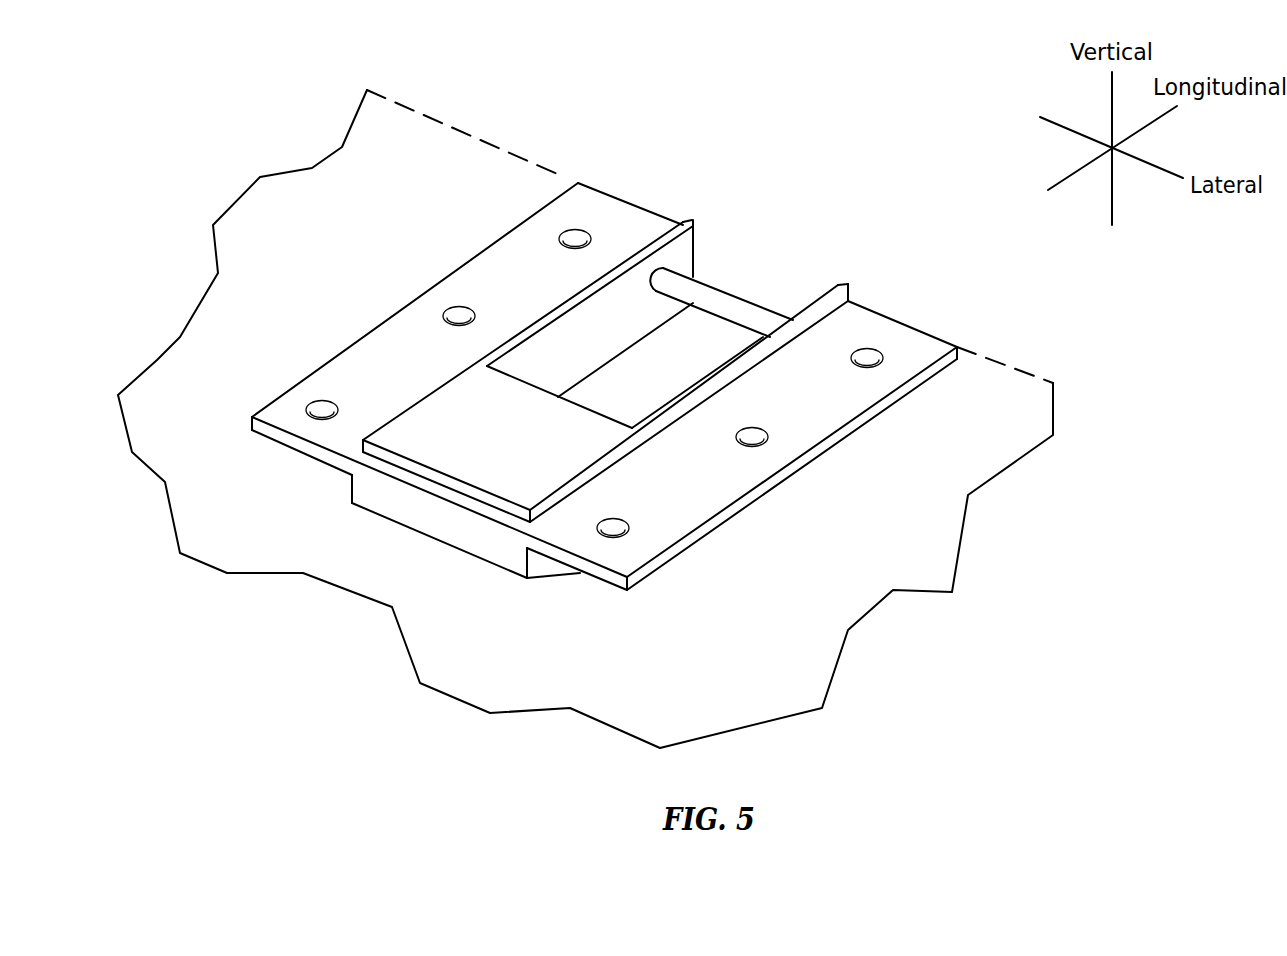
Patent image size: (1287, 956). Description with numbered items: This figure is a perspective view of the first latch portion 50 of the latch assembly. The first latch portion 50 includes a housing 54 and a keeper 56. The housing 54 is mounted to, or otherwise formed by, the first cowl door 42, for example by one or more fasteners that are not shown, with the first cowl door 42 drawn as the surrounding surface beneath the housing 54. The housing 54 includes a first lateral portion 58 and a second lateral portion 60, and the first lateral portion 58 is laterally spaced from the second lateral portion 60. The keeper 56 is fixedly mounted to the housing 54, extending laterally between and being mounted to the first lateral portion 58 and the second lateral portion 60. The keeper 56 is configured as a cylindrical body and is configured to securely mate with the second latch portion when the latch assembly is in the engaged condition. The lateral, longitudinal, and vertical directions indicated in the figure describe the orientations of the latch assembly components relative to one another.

The first cowl door 42 is at (281, 183).
The first latch portion 50 is at (876, 144).
The housing 54 is at (808, 414).
The keeper 56 is at (725, 300).
The first lateral portion 58 is at (905, 332).
The second lateral portion 60 is at (613, 205).